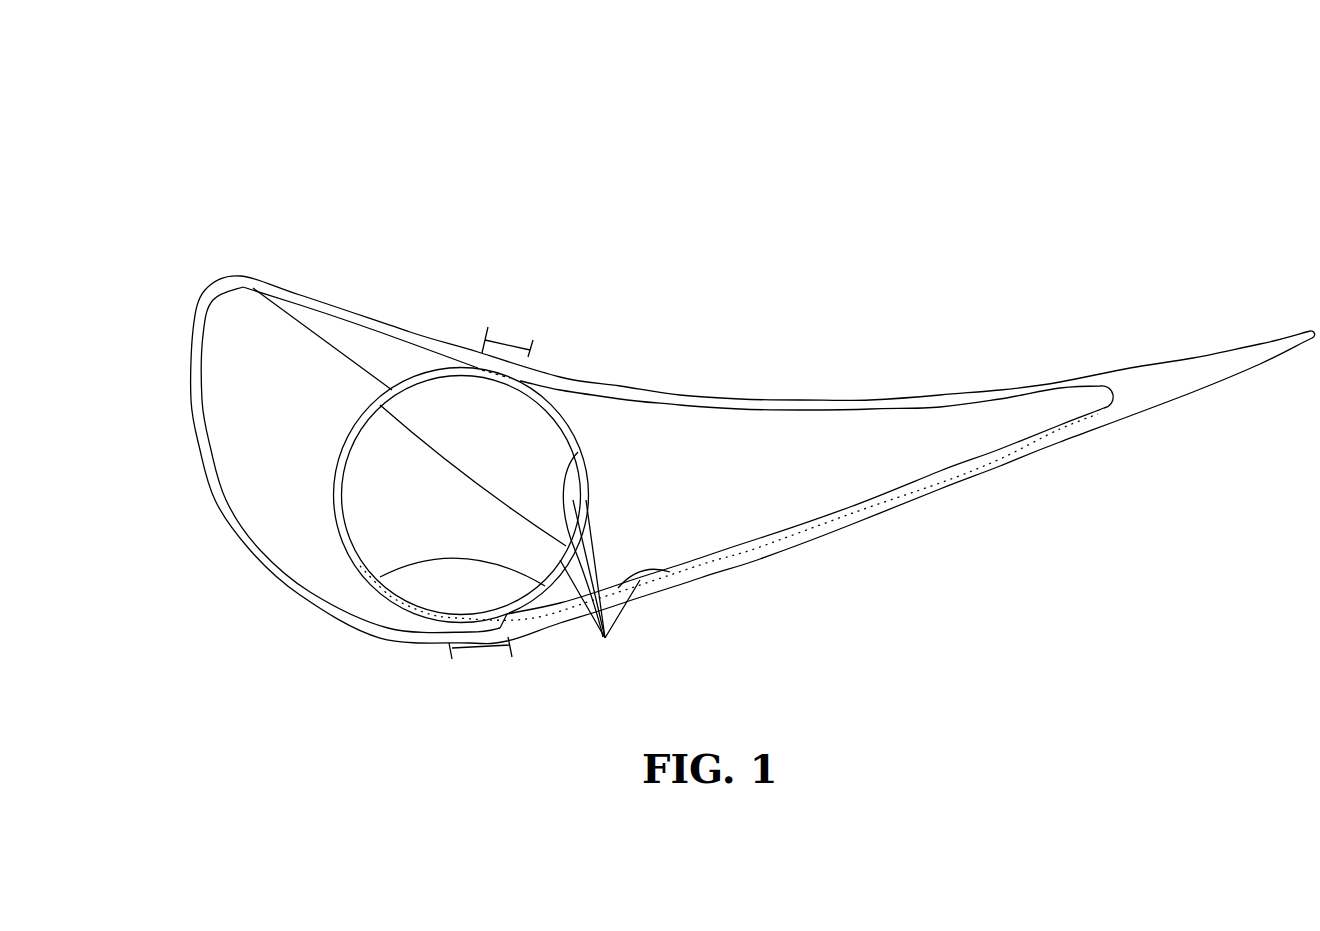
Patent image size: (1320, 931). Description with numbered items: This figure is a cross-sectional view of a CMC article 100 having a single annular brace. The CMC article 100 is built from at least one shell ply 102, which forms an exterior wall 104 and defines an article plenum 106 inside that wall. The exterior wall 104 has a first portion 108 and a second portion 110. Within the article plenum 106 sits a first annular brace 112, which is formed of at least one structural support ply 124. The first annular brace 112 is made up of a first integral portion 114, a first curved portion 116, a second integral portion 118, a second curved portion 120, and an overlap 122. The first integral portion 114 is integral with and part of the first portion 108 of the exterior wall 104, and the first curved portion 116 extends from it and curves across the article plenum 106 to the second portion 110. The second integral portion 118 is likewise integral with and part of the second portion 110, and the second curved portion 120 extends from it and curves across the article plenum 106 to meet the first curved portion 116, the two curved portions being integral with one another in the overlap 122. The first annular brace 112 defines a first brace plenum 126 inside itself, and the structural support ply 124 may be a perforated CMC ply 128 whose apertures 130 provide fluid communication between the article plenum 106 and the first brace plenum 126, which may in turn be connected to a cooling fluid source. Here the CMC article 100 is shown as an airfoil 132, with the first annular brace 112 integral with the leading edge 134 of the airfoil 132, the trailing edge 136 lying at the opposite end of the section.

The CMC article 100 is at (234, 185).
The shell ply 102 is at (318, 305).
The exterior wall 104 is at (390, 327).
The article plenum 106 is at (263, 353).
The first portion 108 is at (485, 652).
The second portion 110 is at (507, 345).
The first annular brace 112 is at (250, 458).
The first integral portion 114 is at (466, 622).
The first curved portion 116 is at (333, 497).
The second integral portion 118 is at (513, 377).
The second curved portion 120 is at (590, 493).
The overlap 122 is at (397, 608).
The structural support ply 124 is at (615, 586).
The first brace plenum 126 is at (408, 530).
The perforated CMC ply 128 is at (343, 438).
The apertures 130 is at (297, 320).
The airfoil 132 is at (508, 214).
The leading edge 134 is at (157, 357).
The trailing edge 136 is at (1209, 306).